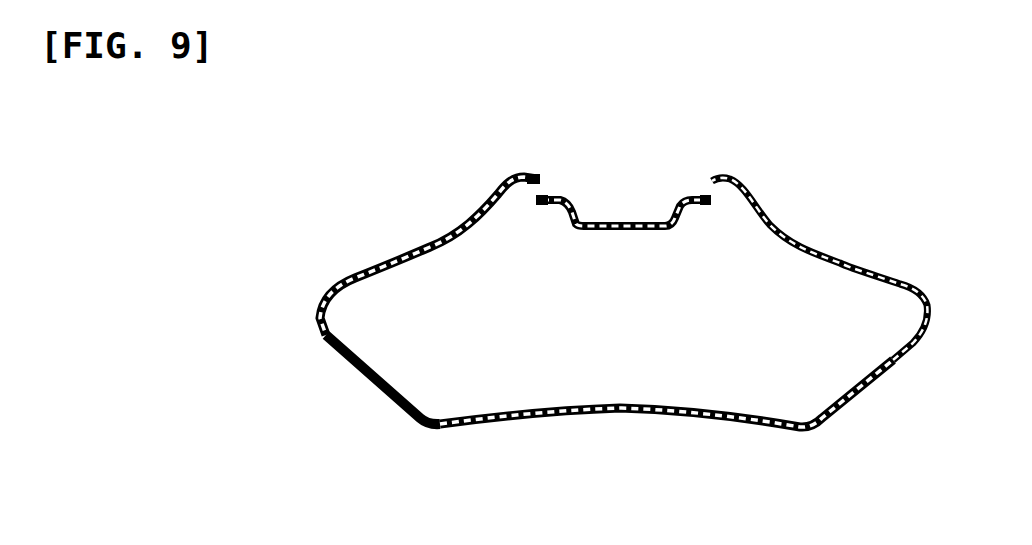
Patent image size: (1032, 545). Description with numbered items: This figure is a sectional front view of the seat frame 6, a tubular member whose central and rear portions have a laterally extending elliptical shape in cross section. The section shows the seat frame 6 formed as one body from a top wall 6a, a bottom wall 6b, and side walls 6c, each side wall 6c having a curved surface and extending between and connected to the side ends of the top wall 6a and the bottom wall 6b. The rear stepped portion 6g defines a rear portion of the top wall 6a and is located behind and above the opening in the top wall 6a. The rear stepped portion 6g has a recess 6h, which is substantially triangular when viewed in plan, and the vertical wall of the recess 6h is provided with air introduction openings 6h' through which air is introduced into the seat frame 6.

The seat frame 6 is at (575, 286).
The top wall 6a is at (405, 256).
The bottom wall 6b is at (530, 422).
The side walls 6c is at (320, 334).
The rear stepped portion 6g is at (520, 174).
The recess 6h is at (624, 162).
The air introduction openings 6h' is at (629, 245).